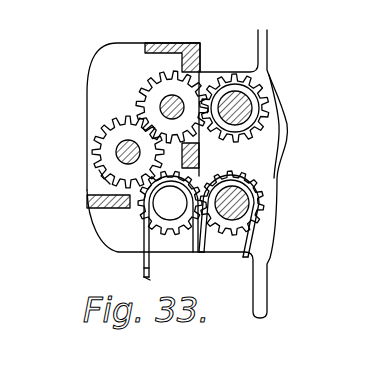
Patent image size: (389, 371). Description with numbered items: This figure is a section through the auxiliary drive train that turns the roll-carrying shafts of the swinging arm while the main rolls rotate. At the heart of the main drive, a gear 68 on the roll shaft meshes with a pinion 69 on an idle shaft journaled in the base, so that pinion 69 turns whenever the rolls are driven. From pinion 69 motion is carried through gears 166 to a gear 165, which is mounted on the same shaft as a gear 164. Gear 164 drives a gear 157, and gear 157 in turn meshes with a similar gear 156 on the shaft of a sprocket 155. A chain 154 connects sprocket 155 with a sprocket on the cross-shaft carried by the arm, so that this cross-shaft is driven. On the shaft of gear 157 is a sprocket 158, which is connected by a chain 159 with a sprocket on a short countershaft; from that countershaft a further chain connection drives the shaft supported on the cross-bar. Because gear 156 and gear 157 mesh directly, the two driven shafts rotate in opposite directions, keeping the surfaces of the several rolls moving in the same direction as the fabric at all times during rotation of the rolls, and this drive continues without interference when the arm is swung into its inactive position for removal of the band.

The gear 68 is at (285, 128).
The pinion 69 is at (240, 76).
The chain 154 is at (257, 248).
The sprocket 155 is at (218, 254).
The gear 156 is at (260, 190).
The gear 157 is at (140, 213).
The sprocket 158 is at (147, 237).
The chain 159 is at (147, 276).
The gear 164 is at (99, 170).
The gear 165 is at (118, 140).
The gears 166 is at (150, 92).